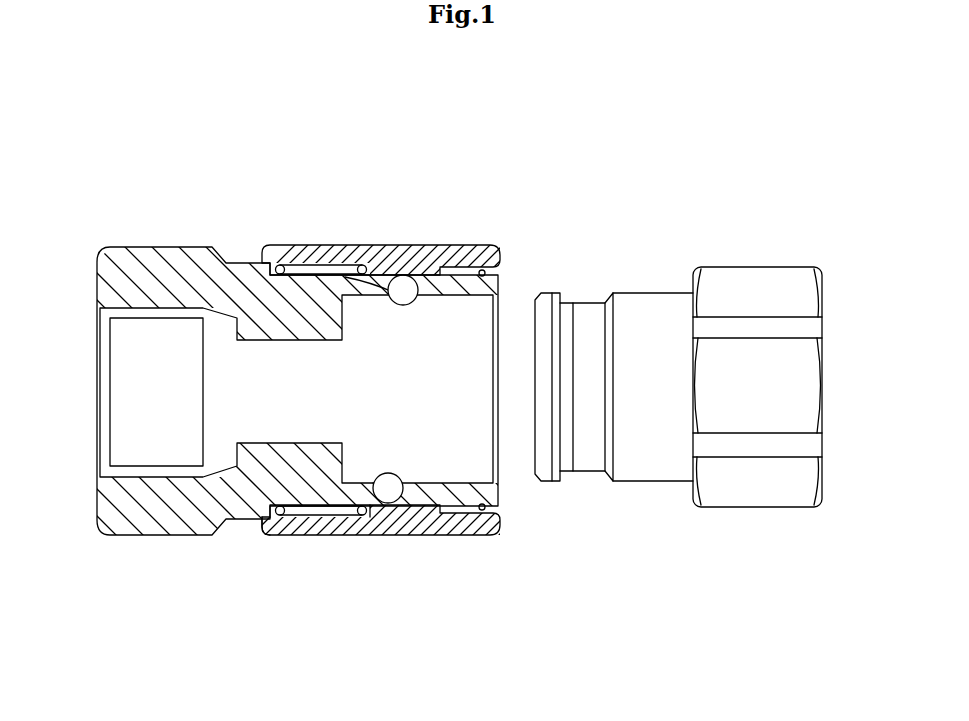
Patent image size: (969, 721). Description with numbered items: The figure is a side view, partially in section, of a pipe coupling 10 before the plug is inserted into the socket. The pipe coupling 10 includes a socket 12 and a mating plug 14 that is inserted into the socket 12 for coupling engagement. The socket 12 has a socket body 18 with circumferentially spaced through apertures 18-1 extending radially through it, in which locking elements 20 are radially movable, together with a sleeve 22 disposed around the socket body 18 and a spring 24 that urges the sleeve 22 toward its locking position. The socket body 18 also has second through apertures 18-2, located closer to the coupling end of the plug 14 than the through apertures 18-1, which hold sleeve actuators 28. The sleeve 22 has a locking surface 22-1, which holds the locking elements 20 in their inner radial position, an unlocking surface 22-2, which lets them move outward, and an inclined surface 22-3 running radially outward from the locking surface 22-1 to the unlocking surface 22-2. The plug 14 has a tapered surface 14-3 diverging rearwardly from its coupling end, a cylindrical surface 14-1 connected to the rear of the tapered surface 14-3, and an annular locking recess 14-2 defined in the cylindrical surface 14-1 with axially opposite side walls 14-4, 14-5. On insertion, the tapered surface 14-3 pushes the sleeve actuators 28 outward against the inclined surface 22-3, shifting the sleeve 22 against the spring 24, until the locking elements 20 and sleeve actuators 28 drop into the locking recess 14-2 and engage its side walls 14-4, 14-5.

The pipe coupling 10 is at (467, 214).
The socket 12 is at (200, 229).
The plug 14 is at (671, 196).
The cylindrical surface 14-1 is at (630, 293).
The annular locking recess 14-2 is at (587, 476).
The tapered surface 14-3 is at (543, 296).
The circumferential side wall 14-4 is at (572, 473).
The circumferential side wall 14-5 is at (607, 476).
The socket body 18 is at (157, 518).
The through aperture 18-1 is at (387, 503).
The second through aperture 18-2 is at (393, 290).
The locking element 20 is at (398, 470).
The sleeve 22 is at (298, 530).
The locking surface 22-1 is at (380, 500).
The unlocking surface 22-2 is at (430, 520).
The inclined surface 22-3 is at (429, 272).
The spring 24 is at (278, 535).
The sleeve actuator 28 is at (313, 246).